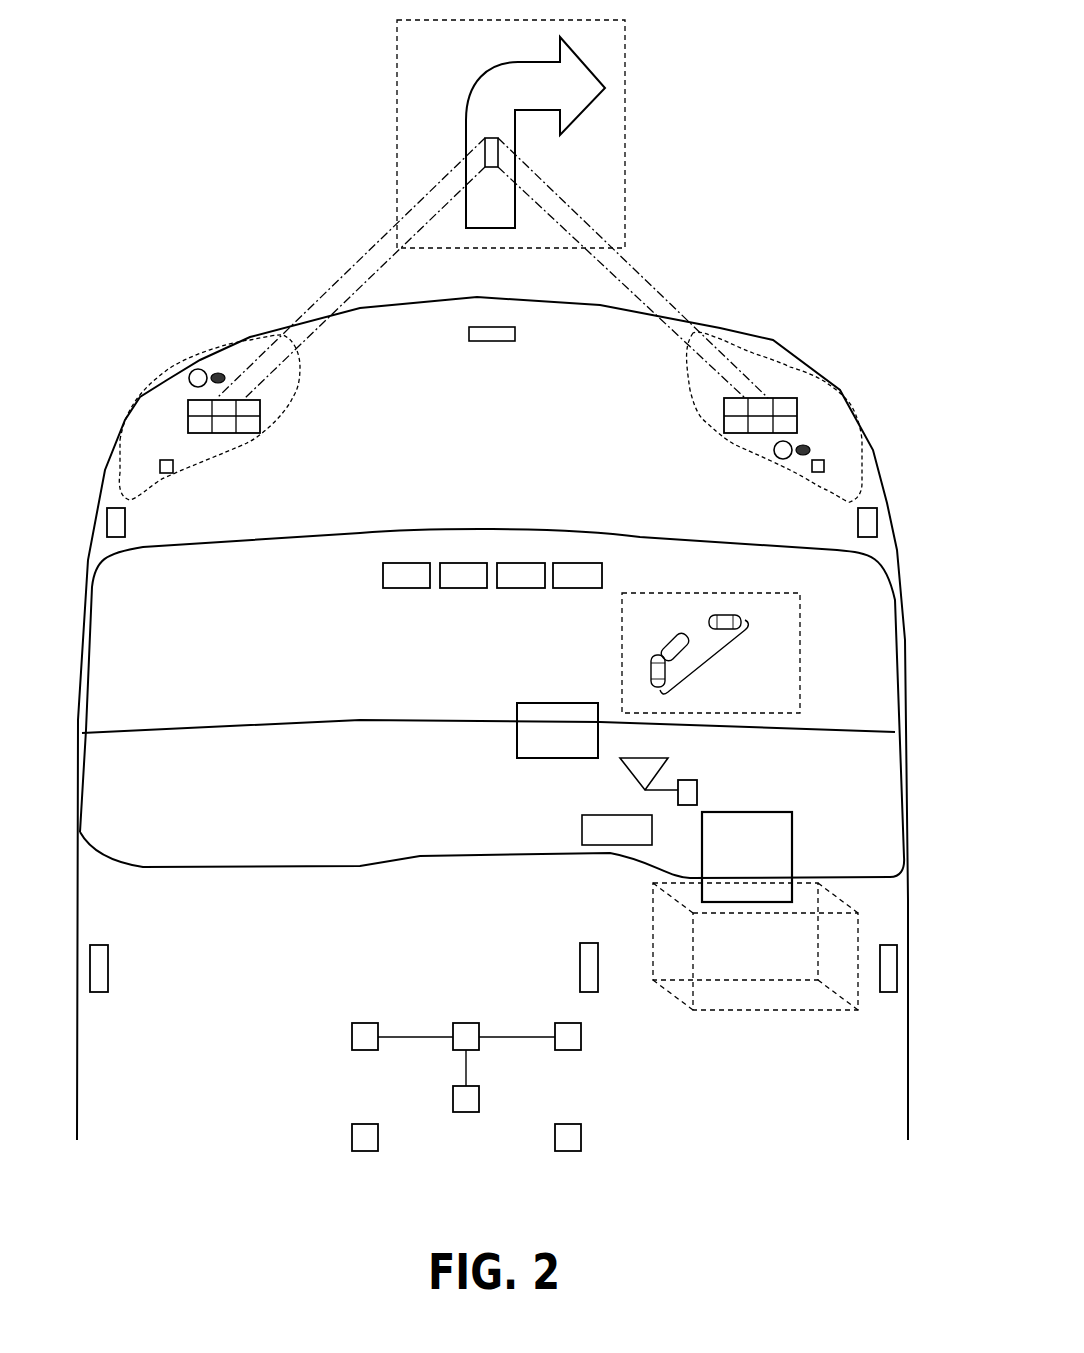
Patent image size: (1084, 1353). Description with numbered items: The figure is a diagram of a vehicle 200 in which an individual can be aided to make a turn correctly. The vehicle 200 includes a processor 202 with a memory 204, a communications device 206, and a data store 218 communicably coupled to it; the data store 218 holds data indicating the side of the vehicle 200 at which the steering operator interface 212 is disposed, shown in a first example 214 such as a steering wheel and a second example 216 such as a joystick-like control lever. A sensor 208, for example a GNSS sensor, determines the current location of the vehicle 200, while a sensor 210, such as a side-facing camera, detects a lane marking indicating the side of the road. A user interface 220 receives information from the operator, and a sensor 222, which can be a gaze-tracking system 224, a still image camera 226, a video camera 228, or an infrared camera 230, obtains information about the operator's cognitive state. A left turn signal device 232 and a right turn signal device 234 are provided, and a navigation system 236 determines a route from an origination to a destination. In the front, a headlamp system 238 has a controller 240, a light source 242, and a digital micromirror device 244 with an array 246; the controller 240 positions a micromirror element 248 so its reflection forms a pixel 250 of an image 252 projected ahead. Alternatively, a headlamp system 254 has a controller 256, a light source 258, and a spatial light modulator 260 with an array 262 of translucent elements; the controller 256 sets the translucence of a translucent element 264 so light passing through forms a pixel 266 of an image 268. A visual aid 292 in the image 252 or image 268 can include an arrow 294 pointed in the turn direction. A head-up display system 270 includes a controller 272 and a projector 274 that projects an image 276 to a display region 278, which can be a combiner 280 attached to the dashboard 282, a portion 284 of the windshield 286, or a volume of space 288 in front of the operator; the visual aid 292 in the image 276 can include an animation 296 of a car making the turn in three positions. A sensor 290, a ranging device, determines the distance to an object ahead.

The vehicle 200 is at (164, 113).
The processor 202 is at (466, 1023).
The memory 204 is at (365, 1023).
The communications device 206 is at (581, 1037).
The sensor 208 is at (352, 1138).
The sensor 210 is at (108, 965).
The steering operator interface 212 is at (702, 902).
The first example 214 is at (793, 857).
The second example 216 is at (580, 970).
The data store 218 is at (466, 1112).
The user interface 220 is at (636, 843).
The sensor 222 is at (490, 524).
The gaze-tracking system 224 is at (415, 563).
The still image camera 226 is at (470, 563).
The video camera 228 is at (528, 563).
The infrared camera 230 is at (585, 563).
The left turn signal device 232 is at (125, 525).
The right turn signal device 234 is at (858, 528).
The navigation system 236 is at (581, 1140).
The headlamp system 238 is at (155, 383).
The controller 240 is at (160, 466).
The light source 242 is at (210, 368).
The digital micromirror device 244 is at (259, 398).
The array 246 is at (223, 405).
The micromirror element 248 is at (259, 398).
The pixel 250 is at (492, 220).
The image 252 is at (571, 134).
The headlamp system 254 is at (793, 362).
The controller 256 is at (825, 463).
The light source 258 is at (773, 447).
The spatial light modulator 260 is at (827, 364).
The array 262 is at (757, 408).
The translucent element 264 is at (827, 364).
The pixel 266 is at (487, 137).
The image 268 is at (627, 58).
The head-up display system 270 is at (618, 855).
The controller 272 is at (667, 765).
The projector 274 is at (697, 798).
The image 276 is at (714, 667).
The display region 278 is at (618, 855).
The combiner 280 is at (538, 703).
The dashboard 282 is at (90, 788).
The portion 284 is at (742, 646).
The windshield 286 is at (888, 692).
The volume of space 288 is at (788, 1012).
The sensor 290 is at (492, 341).
The visual aid 292 is at (607, 132).
The arrow 294 is at (580, 96).
The animation 296 is at (714, 667).